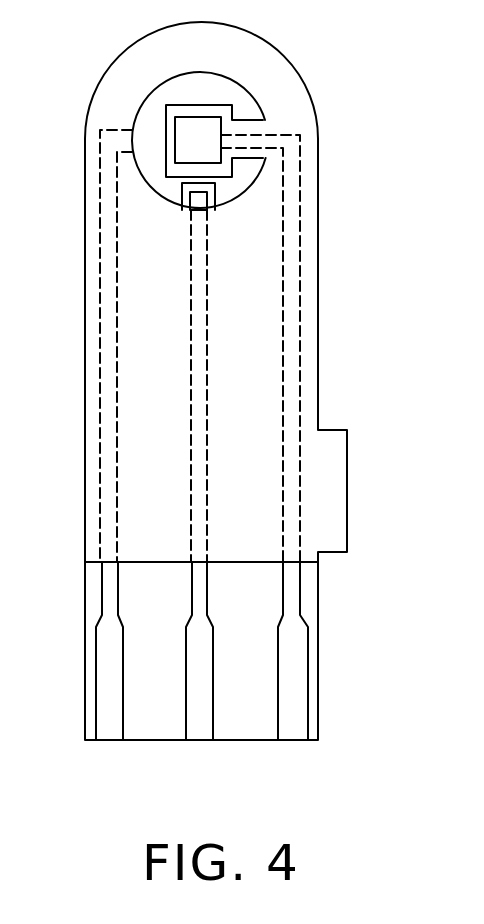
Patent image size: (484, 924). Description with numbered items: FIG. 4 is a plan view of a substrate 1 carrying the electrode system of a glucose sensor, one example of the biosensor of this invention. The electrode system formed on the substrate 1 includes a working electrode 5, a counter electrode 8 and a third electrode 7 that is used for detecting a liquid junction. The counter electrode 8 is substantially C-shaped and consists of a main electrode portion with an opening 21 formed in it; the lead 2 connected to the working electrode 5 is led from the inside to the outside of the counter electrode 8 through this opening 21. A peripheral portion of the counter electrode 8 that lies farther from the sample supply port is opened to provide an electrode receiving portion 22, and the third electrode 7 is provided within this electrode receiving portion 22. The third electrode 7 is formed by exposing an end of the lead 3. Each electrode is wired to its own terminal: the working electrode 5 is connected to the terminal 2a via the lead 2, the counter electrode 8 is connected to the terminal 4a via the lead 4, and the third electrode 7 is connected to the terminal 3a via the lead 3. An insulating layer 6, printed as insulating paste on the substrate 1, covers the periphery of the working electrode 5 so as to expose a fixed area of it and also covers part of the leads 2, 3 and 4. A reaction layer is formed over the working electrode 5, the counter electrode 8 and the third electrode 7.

The substrate 1 is at (244, 716).
The lead 2 is at (302, 505).
The lead 3 is at (207, 373).
The lead 4 is at (102, 443).
The terminal 2a is at (293, 727).
The terminal 3a is at (202, 728).
The terminal 4a is at (107, 730).
The working electrode 5 is at (193, 128).
The insulating layer 6 is at (258, 290).
The third electrode 7 is at (195, 202).
The counter electrode 8 is at (207, 88).
The opening 21 is at (270, 127).
The electrode receiving portion 22 is at (222, 188).